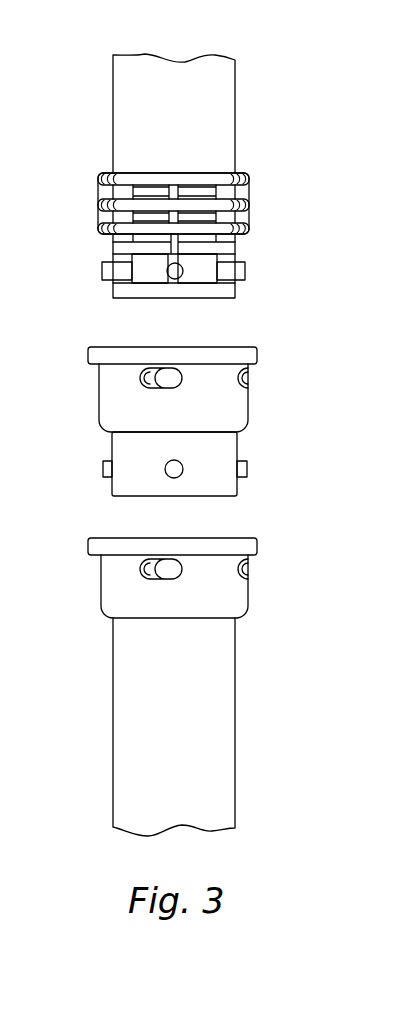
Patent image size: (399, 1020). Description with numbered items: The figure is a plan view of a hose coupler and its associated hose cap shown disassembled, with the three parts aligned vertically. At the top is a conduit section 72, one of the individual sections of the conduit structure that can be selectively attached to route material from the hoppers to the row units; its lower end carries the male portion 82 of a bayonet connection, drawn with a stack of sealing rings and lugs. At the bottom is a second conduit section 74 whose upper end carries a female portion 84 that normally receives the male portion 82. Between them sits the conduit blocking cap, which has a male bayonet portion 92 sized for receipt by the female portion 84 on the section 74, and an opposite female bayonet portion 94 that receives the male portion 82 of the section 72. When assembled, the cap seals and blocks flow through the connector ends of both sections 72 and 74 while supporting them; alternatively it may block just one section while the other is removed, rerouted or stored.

The conduit section 72 is at (235, 112).
The male portion of bayonet connection 82 is at (245, 272).
The female bayonet portion 94 is at (243, 407).
The male bayonet portion 92 is at (247, 470).
The female portion of bayonet connection 84 is at (248, 594).
The conduit section 74 is at (235, 742).